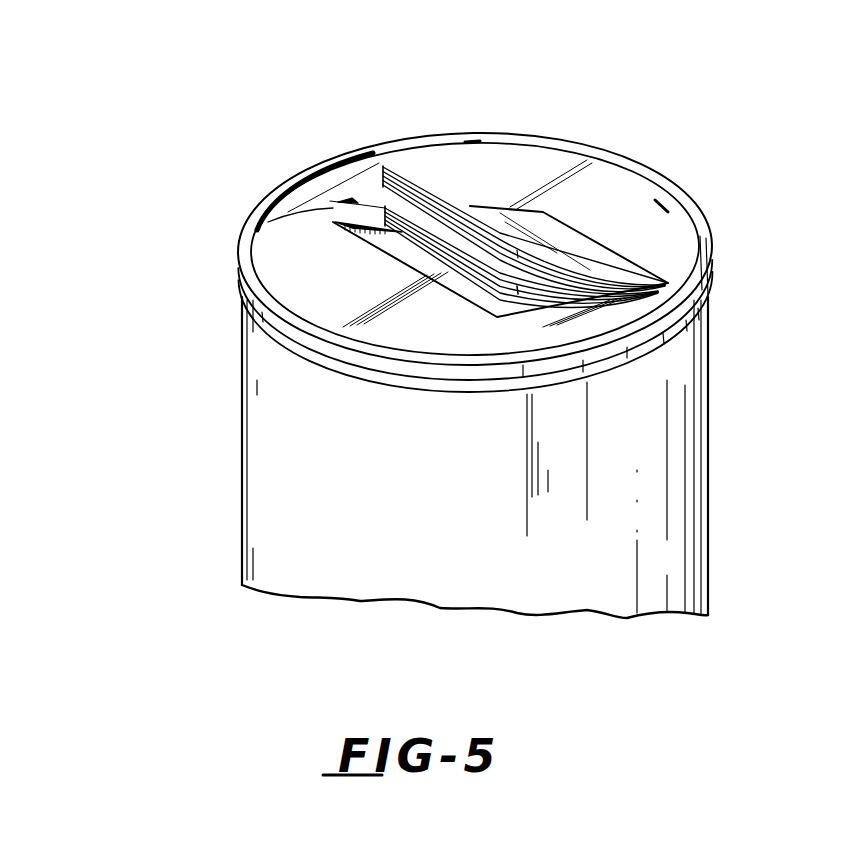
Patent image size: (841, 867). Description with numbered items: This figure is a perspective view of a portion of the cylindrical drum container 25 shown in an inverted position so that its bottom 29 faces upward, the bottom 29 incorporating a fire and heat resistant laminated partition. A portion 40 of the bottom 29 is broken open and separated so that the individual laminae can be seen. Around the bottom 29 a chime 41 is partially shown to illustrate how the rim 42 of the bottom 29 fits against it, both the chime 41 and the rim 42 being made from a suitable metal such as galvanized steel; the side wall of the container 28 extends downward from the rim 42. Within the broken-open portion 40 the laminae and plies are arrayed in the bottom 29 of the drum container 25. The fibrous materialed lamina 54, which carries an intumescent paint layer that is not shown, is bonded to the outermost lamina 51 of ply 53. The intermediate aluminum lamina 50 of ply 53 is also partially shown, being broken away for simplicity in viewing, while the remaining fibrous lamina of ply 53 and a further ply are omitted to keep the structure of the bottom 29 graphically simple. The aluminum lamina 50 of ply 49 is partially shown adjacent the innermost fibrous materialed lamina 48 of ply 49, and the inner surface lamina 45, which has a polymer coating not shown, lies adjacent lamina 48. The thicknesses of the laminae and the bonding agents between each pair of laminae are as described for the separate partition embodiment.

The drum container 25 is at (548, 137).
The skirt 28 is at (242, 465).
The bottom 29 is at (626, 208).
The portion 40 is at (484, 213).
The chime 41 is at (682, 329).
The rim 42 is at (712, 243).
The inner surface lamina 45 is at (402, 237).
The fibrous materialed lamina 48 is at (268, 222).
The ply 49 is at (330, 201).
The aluminum lamina 50 is at (387, 176).
The outermost lamina 51 is at (382, 183).
The ply 53 is at (378, 180).
The fibrous materialed lamina 54 is at (385, 180).